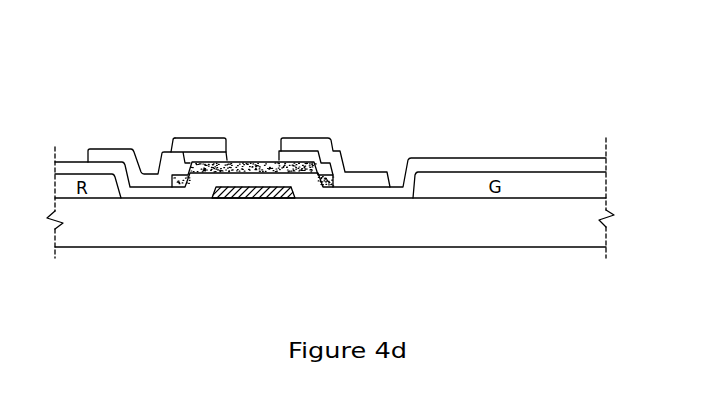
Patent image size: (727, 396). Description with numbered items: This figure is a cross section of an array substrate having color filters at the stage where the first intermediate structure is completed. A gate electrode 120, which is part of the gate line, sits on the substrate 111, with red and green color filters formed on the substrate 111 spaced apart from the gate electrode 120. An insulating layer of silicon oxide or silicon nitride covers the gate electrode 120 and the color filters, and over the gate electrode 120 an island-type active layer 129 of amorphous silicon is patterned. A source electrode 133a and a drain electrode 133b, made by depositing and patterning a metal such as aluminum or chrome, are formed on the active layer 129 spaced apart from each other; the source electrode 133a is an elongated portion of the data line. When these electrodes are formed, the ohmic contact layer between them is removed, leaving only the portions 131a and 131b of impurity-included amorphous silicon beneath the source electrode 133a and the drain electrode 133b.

The substrate 111 is at (327, 234).
The gate electrode 120 is at (258, 198).
The active layer 129 is at (256, 160).
The ohmic contact layer portion 131a is at (187, 142).
The ohmic contact layer portion 131b is at (307, 156).
The source electrode 133a is at (208, 140).
The drain electrode 133b is at (332, 138).